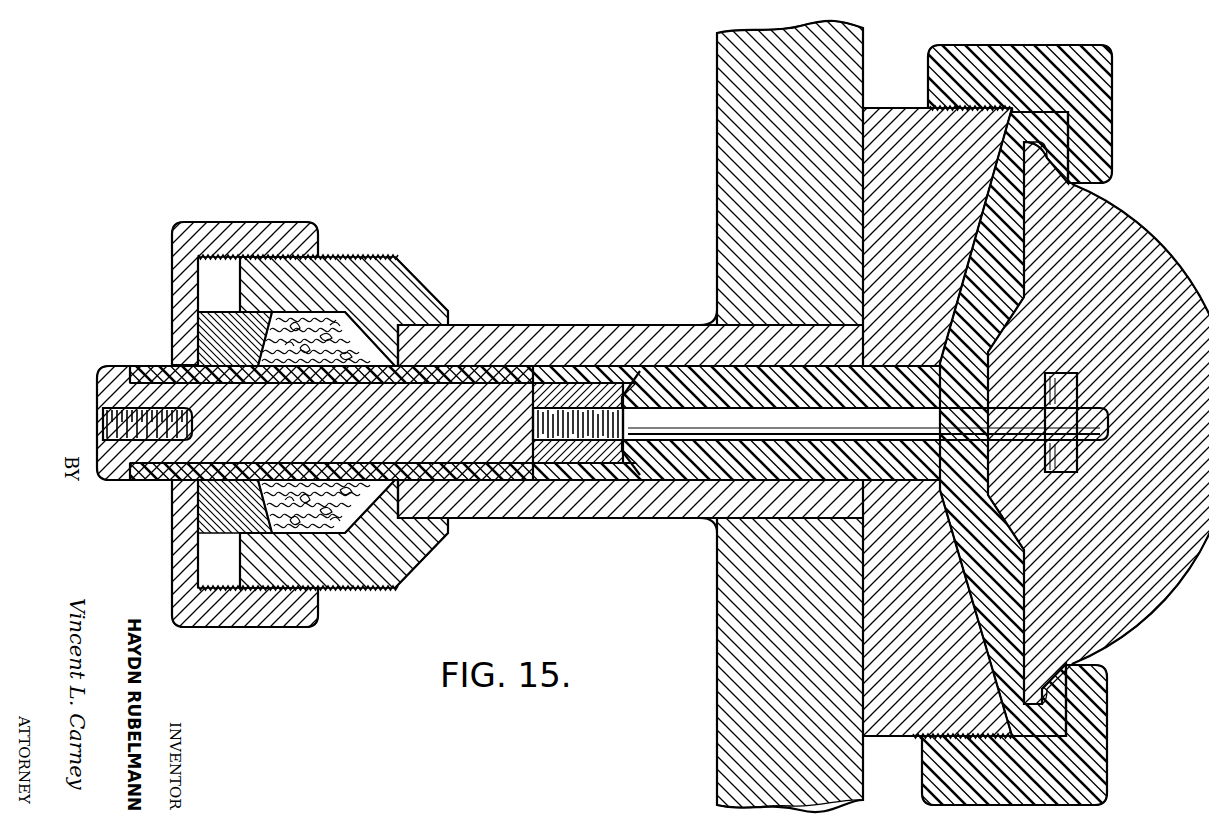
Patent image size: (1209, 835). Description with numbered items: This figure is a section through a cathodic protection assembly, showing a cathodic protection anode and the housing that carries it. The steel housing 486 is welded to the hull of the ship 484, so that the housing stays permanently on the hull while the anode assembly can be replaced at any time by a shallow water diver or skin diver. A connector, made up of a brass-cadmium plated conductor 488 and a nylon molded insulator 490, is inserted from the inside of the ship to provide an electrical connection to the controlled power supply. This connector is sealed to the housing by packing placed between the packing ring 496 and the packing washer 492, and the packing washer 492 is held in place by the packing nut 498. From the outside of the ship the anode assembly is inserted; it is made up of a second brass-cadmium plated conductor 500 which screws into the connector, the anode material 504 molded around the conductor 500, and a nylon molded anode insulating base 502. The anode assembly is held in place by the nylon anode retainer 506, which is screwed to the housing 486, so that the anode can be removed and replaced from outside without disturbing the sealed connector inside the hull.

The hull of the ship 484 is at (727, 99).
The steel housing 486 is at (606, 332).
The brass-cadmium plated conductor 488 is at (97, 378).
The nylon molded insulator 490 is at (152, 366).
The packing washer 492 is at (203, 333).
The packing ring 496 is at (408, 275).
The packing nut 498 is at (266, 222).
The brass-cadmium plated conductor 500 is at (1080, 462).
The nylon molded anode insulating base 502 is at (1003, 530).
The anode material 504 is at (1130, 218).
The nylon anode retainer 506 is at (1105, 95).